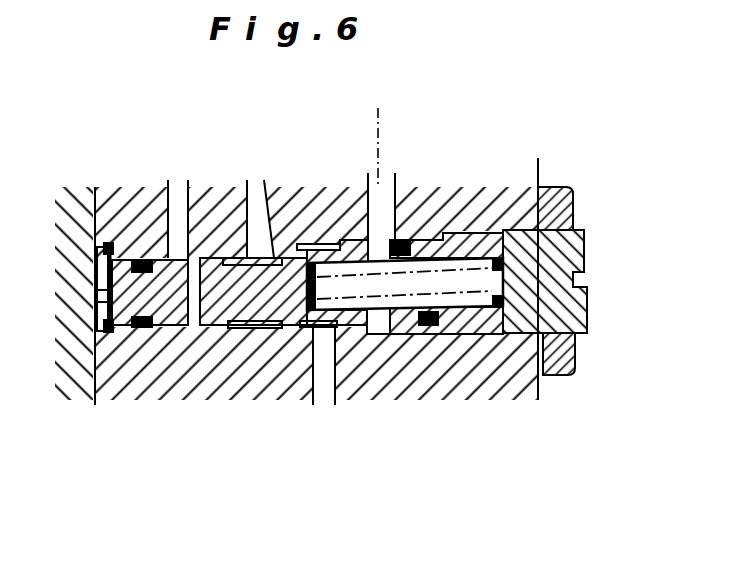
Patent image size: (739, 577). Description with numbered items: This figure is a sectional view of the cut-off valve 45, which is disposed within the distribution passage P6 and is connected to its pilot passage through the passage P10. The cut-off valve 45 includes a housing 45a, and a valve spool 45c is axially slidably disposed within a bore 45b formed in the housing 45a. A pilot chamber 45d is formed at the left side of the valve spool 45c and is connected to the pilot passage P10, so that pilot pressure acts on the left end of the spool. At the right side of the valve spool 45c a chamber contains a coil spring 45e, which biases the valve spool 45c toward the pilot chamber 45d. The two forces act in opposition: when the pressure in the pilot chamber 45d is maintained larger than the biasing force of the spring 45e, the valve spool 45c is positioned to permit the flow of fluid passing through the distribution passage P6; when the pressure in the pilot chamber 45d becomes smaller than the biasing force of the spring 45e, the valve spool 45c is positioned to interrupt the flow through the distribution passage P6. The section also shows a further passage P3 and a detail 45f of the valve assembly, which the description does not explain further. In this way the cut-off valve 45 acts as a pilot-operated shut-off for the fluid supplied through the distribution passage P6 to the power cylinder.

The cut-off valve 45 is at (458, 148).
The housing 45a is at (376, 340).
The bore 45b is at (288, 322).
The valve spool 45c is at (252, 320).
The pilot chamber 45d is at (188, 322).
The coil spring 45e is at (474, 310).
The seal 45f is at (428, 328).
The port P3 is at (380, 112).
The distribution passage P6 is at (270, 186).
The passage P10 is at (188, 178).